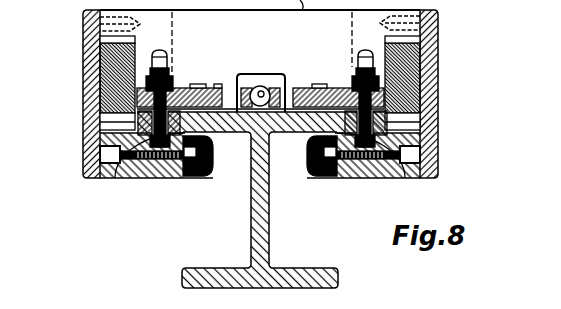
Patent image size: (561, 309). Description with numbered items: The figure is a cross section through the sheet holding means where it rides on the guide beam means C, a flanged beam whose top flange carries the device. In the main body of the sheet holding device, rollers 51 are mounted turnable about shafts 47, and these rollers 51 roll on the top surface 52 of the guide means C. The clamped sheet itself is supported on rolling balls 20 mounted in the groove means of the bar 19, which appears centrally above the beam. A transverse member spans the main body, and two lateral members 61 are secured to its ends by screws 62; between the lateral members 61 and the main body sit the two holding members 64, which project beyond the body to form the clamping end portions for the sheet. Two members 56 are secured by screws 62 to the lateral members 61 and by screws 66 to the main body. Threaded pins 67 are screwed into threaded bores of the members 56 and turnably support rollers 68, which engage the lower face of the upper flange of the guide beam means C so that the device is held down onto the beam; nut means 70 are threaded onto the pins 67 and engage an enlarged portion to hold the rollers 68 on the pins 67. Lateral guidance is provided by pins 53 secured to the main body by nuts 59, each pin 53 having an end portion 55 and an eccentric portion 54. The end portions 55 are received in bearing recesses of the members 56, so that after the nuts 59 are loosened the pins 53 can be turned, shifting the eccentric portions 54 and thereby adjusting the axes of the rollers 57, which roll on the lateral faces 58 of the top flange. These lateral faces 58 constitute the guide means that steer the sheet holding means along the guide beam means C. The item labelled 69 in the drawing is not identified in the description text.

The bar 19 is at (267, 88).
The rolling balls 20 is at (256, 88).
The shafts 47 is at (233, 76).
The rollers 51 is at (200, 84).
The top surface 52 is at (334, 89).
The pins 53 is at (183, 78).
The eccentric portion 54 is at (140, 124).
The end portion 55 is at (117, 180).
The members 56 is at (170, 179).
The rollers 57 is at (156, 55).
The lateral faces 58 is at (222, 133).
The nuts 59 is at (262, 41).
The lateral members 61 is at (90, 80).
The screws 62 is at (88, 29).
The holding members 64 is at (110, 57).
The screws 66 is at (157, 180).
The pins 67 is at (147, 180).
The rollers 68 is at (190, 180).
The jaw pad 69 is at (200, 170).
The nut means 70 is at (212, 175).
The guide beam means C is at (257, 235).